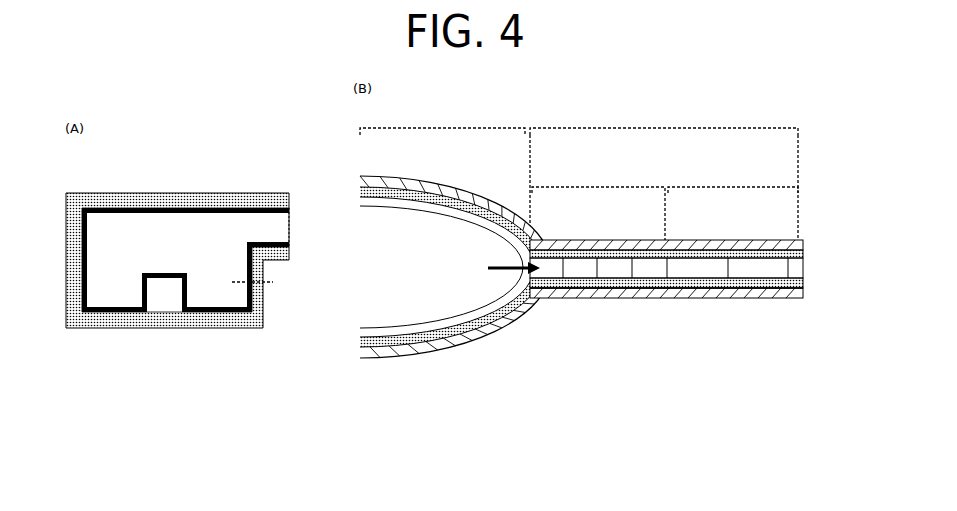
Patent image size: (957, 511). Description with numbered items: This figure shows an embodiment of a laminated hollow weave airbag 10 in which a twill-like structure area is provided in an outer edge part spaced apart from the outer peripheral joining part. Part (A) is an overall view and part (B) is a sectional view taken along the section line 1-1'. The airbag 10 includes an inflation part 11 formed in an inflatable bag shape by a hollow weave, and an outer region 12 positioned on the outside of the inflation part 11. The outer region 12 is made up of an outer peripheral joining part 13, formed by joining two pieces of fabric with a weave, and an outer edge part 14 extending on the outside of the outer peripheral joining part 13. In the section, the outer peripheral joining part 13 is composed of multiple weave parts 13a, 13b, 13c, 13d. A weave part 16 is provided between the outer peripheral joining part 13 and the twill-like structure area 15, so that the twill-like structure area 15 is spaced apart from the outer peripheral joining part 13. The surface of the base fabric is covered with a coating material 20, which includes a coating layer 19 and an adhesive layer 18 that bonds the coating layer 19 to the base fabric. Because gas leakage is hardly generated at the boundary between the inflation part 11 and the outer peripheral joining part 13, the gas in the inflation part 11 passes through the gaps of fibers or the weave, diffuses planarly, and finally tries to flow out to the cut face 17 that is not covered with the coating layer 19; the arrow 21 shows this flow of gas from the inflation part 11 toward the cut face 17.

The section line 1-1' 1 is at (254, 282).
The airbag 10 is at (197, 186).
The inflation part 11 is at (165, 238).
The outer region 12 is at (664, 175).
The outer peripheral joining part 13 is at (103, 310).
The weave part 13a is at (548, 272).
The weave part 13b is at (580, 272).
The weave part 13c is at (613, 272).
The weave part 13d is at (647, 272).
The outer edge part 14 is at (733, 180).
The twill-like structure area 15 is at (130, 315).
The weave part 16 is at (195, 318).
The cut face 17 is at (263, 303).
The adhesive layer 18 is at (167, 302).
The coating layer 19 is at (457, 347).
The coating material 20 is at (805, 245).
The flow of gas 21 is at (503, 269).